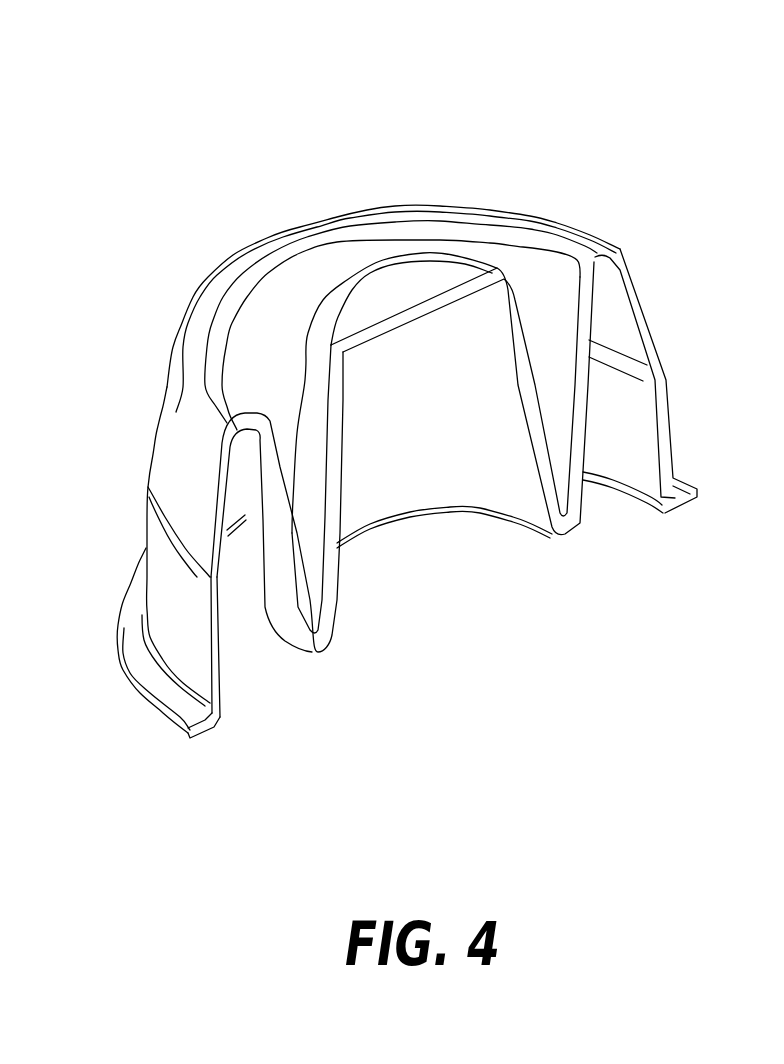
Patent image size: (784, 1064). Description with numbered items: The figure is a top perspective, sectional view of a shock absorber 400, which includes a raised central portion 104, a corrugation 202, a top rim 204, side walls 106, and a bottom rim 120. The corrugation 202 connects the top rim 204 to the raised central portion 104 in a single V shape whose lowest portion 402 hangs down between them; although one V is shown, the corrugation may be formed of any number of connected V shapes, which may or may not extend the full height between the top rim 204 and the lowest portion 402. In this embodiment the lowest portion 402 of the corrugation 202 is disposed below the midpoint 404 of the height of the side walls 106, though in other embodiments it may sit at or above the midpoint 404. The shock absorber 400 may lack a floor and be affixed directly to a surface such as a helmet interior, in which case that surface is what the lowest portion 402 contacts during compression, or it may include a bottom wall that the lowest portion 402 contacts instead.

The shock absorber 400 is at (183, 80).
The central portion 104 is at (440, 278).
The top rim 204 is at (506, 214).
The corrugation 202 is at (530, 293).
The side walls 106 is at (174, 413).
The midpoint 404 is at (148, 503).
The lowest portion 402 is at (318, 650).
The bottom rim 120 is at (187, 734).